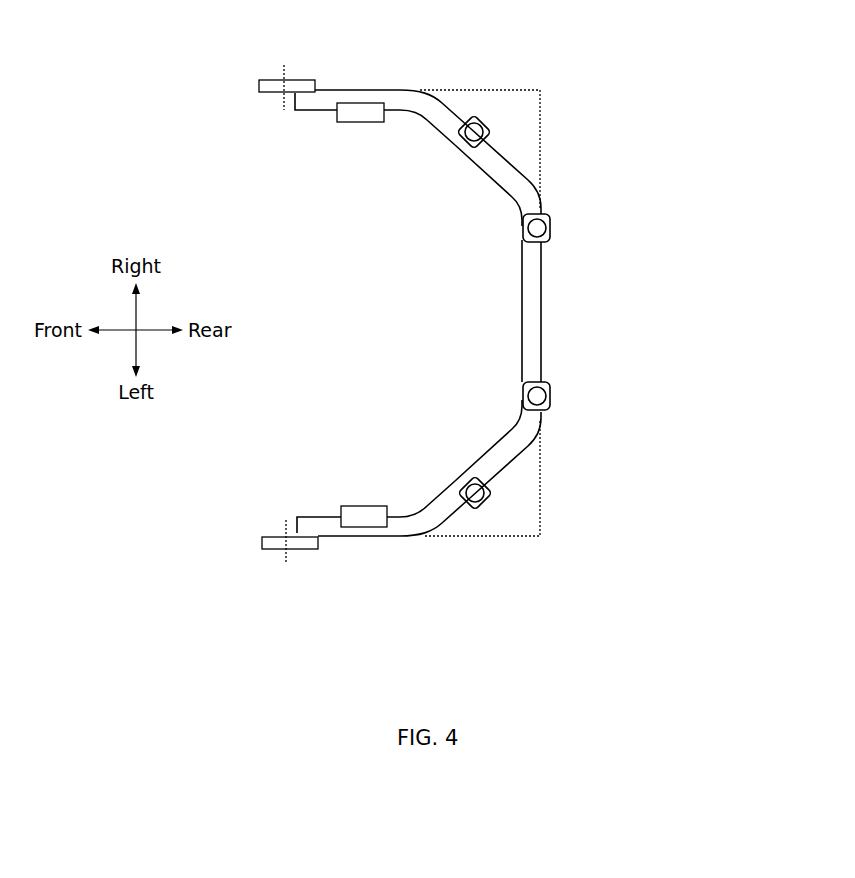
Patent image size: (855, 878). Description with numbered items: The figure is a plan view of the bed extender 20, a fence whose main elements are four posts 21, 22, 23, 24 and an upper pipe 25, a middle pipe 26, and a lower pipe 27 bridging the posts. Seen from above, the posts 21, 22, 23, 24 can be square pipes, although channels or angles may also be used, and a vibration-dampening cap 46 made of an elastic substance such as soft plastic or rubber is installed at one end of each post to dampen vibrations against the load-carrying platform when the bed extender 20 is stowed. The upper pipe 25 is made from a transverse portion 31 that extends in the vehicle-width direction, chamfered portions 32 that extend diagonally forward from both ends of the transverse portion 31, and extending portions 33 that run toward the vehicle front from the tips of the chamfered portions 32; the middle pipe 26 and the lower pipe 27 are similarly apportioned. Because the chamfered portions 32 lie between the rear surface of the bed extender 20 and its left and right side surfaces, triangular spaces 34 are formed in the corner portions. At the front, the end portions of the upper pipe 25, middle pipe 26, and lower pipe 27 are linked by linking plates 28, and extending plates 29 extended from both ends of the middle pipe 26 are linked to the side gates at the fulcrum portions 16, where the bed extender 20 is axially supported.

The fulcrum portion 16 is at (282, 71).
The bed extender 20 is at (479, 313).
The post 21 is at (492, 497).
The post 22 is at (551, 396).
The post 23 is at (551, 228).
The post 24 is at (482, 118).
The upper pipe 25 is at (614, 311).
The middle pipe 26 is at (614, 311).
The lower pipe 27 is at (614, 311).
The linking plate 28 is at (372, 122).
The extending plate 29 is at (259, 87).
The transverse portion 31 is at (522, 313).
The chamfered portion 32 is at (512, 150).
The extending portion 33 is at (375, 90).
The triangular space 34 is at (522, 102).
The vibration-dampening cap 46 is at (469, 118).